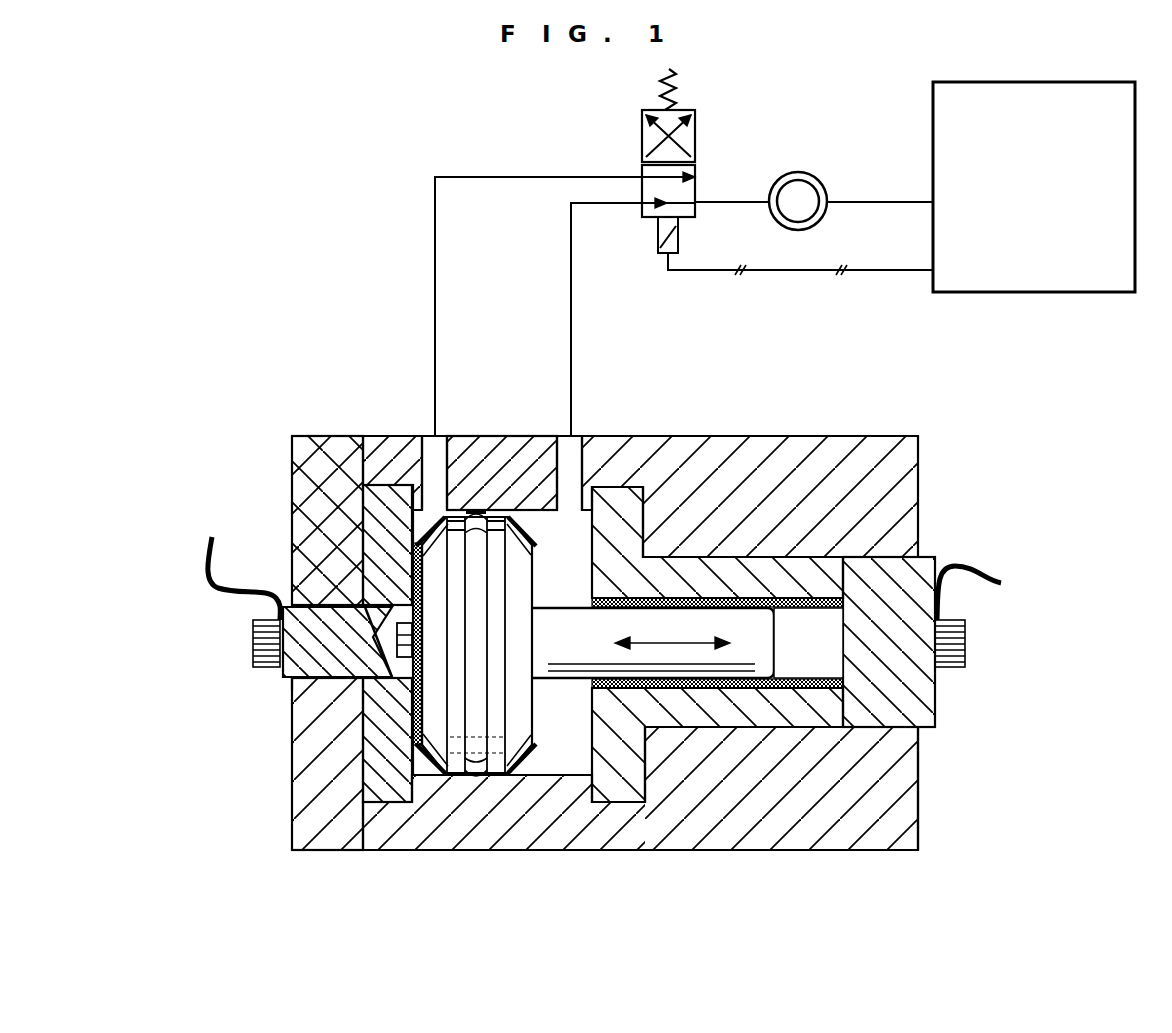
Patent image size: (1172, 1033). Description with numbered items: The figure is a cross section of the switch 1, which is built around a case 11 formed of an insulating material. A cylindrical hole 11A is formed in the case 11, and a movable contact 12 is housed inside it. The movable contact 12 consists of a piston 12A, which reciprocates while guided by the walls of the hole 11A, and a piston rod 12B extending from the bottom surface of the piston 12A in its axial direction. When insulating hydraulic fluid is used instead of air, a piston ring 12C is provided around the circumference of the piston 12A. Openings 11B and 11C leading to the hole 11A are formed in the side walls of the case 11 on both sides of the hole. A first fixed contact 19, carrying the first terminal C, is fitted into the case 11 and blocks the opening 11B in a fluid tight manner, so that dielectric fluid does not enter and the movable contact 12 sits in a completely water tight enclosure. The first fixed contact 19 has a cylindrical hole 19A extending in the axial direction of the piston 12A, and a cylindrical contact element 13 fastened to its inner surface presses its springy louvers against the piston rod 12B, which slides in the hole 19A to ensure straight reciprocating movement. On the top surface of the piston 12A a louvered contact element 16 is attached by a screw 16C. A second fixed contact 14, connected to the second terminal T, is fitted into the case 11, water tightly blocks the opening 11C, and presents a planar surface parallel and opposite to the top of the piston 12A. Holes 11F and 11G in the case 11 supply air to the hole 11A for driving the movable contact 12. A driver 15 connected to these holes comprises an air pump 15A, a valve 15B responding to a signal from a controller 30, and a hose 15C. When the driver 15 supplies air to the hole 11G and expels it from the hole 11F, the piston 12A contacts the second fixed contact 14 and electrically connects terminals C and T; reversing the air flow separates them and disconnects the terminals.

The switch 1 is at (975, 458).
The case 11 is at (629, 620).
The cylindrical hole 11A is at (567, 763).
The opening 11B is at (925, 732).
The opening 11C is at (284, 680).
The hole 11F is at (440, 445).
The hole 11G is at (575, 445).
The movable contact 12 is at (483, 631).
The piston 12A is at (432, 583).
The piston rod 12B is at (725, 617).
The piston ring 12C is at (483, 777).
The cylindrical contact element 13 is at (697, 687).
The second fixed contact 14 is at (348, 668).
The driver 15 is at (621, 248).
The air pump 15A is at (875, 162).
The valve 15B is at (642, 150).
The hose 15C is at (422, 220).
The contact element 16 is at (400, 712).
The screw 16C is at (415, 590).
The first fixed contact 19 is at (916, 568).
The cylindrical hole 19A is at (788, 643).
The controller 30 is at (1060, 293).